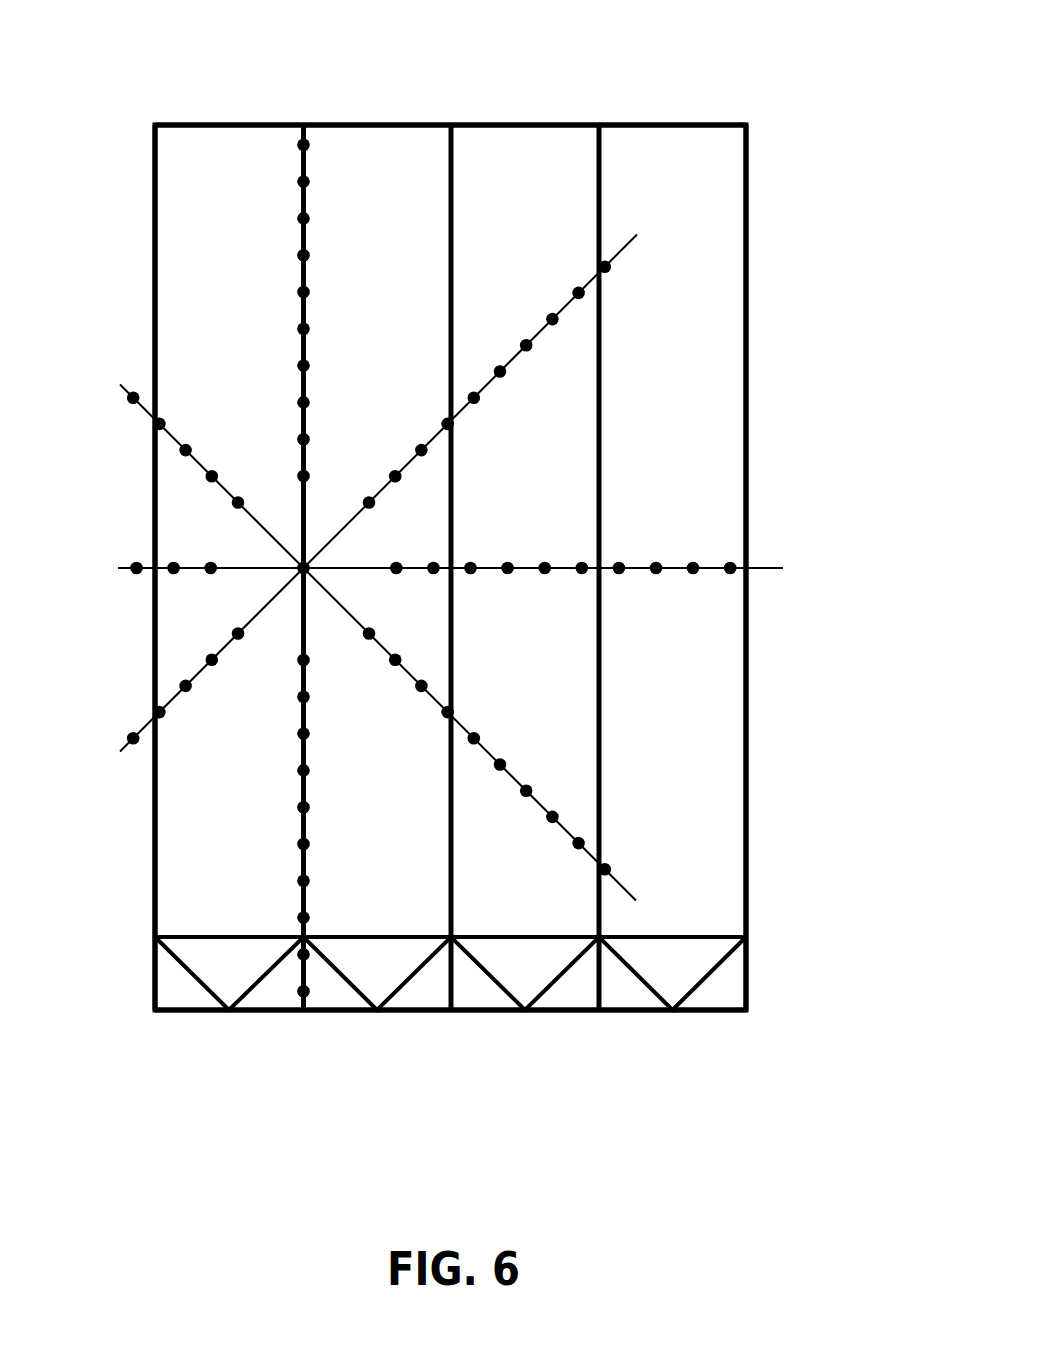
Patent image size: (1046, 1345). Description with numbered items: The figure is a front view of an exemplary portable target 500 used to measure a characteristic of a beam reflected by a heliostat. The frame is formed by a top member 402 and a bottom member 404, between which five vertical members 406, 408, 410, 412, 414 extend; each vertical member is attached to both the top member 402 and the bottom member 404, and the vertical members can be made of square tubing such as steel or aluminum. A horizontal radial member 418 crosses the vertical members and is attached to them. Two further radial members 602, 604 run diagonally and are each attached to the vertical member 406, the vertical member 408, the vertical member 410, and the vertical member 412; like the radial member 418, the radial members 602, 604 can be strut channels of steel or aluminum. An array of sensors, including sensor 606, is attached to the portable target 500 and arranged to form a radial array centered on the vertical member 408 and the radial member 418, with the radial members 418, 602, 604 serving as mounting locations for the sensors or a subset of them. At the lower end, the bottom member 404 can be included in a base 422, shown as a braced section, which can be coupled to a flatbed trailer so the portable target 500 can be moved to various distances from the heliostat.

The grid structure 500 is at (748, 50).
The top member 402 is at (225, 125).
The bottom member 404 is at (337, 1013).
The vertical member 406 is at (153, 200).
The vertical member 408 is at (302, 195).
The vertical member 410 is at (450, 205).
The vertical member 412 is at (598, 195).
The vertical member 414 is at (745, 195).
The radial member 418 is at (118, 568).
The base 422 is at (755, 975).
The radial member 602 is at (120, 384).
The radial member 604 is at (120, 752).
The sensor 606 is at (302, 327).